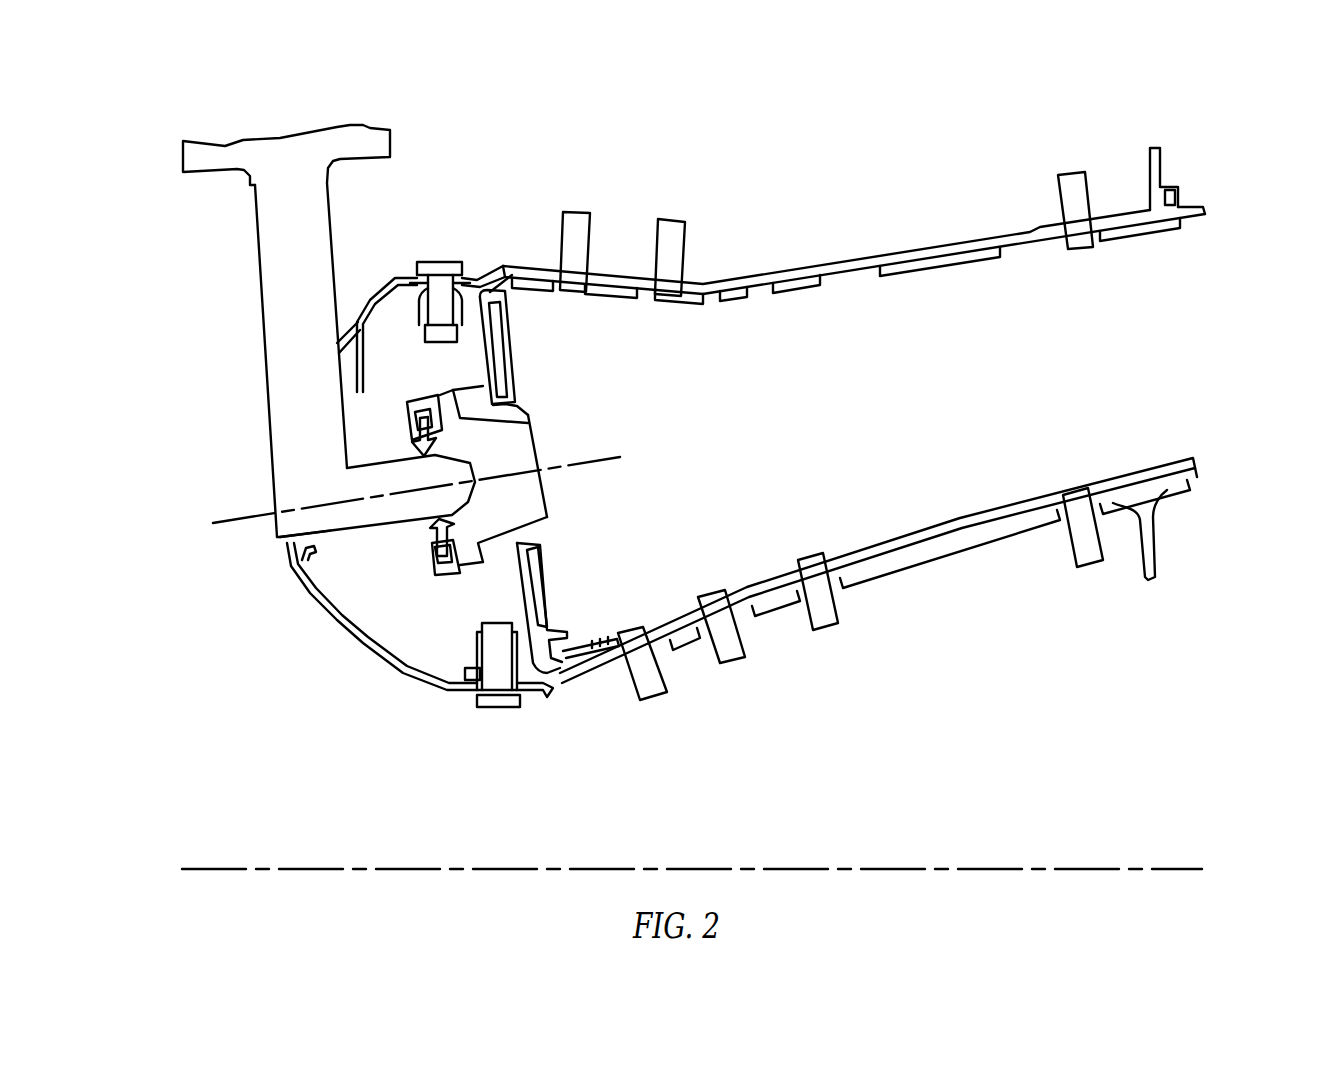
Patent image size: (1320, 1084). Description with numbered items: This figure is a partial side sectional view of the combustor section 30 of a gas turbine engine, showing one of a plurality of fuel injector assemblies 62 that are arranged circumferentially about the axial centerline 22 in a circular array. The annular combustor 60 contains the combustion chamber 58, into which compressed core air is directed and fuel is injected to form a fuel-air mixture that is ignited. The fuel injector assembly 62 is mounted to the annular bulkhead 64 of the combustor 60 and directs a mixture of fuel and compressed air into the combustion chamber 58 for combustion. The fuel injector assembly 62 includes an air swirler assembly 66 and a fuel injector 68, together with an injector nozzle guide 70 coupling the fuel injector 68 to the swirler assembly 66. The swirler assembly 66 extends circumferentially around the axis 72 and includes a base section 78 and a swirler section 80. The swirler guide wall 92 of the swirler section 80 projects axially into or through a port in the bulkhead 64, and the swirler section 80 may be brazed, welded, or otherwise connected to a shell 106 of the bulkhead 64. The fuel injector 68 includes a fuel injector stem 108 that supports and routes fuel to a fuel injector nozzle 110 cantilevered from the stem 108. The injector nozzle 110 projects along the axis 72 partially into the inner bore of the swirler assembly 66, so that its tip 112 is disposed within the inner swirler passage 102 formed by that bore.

The axial centerline 22 is at (1170, 868).
The combustor section 30 is at (1192, 126).
The combustion chamber 58 is at (843, 427).
The combustor 60 is at (864, 246).
The fuel injector assembly 62 is at (252, 456).
The bulkhead 64 is at (560, 577).
The air swirler assembly 66 is at (532, 403).
The fuel injector 68 is at (256, 530).
The injector nozzle guide 70 is at (420, 540).
The axis 72 is at (618, 456).
The base section 78 is at (415, 397).
The swirler section 80 is at (483, 388).
The swirler guide wall 92 is at (541, 526).
The inner swirler passage 102 is at (500, 444).
The shell 106 is at (560, 674).
The fuel injector stem 108 is at (243, 277).
The fuel injector nozzle 110 is at (373, 534).
The tip 112 is at (524, 488).